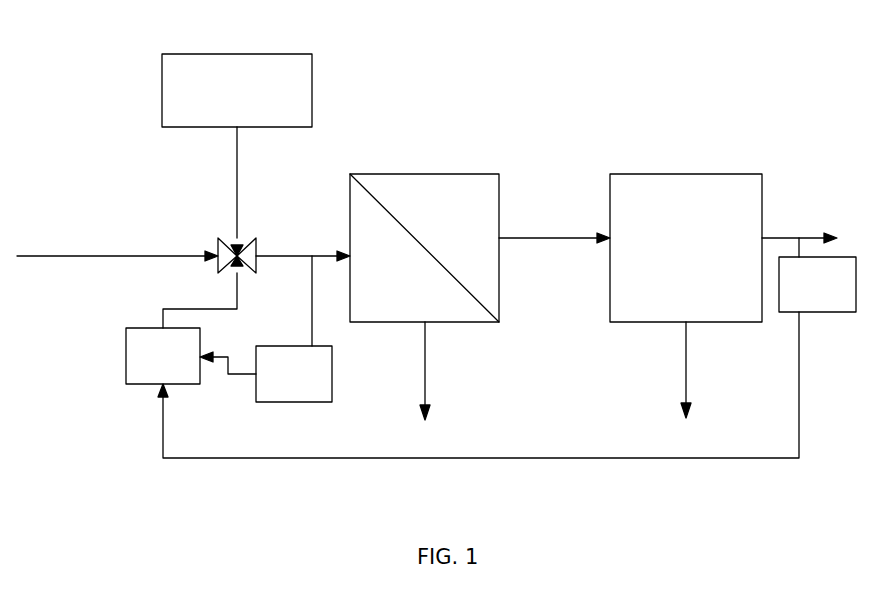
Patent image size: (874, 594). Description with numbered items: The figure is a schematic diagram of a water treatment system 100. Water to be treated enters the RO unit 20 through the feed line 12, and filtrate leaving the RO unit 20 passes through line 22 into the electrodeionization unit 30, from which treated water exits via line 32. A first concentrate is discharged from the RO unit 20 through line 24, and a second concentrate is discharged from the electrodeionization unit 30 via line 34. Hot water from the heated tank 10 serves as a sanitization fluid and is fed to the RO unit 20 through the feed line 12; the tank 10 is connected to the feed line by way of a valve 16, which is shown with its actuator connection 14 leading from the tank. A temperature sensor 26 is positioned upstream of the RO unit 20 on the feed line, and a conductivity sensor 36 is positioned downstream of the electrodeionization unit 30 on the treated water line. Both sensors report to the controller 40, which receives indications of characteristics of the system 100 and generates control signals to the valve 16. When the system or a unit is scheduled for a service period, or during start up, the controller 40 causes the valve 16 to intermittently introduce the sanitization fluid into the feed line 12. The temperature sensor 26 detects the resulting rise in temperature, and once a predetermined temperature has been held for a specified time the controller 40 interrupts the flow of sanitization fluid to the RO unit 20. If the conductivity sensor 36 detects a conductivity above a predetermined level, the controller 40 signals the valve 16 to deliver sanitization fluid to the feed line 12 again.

The water treatment system 100 is at (667, 128).
The heated tank 10 is at (237, 90).
The line 12 is at (305, 258).
The actuator connection 14 is at (237, 218).
The valve 16 is at (252, 243).
The RO unit 20 is at (424, 248).
The line 22 is at (519, 238).
The line 24 is at (427, 330).
The temperature sensor 26 is at (266, 329).
The electrodeionization unit 30 is at (686, 248).
The line 32 is at (780, 238).
The line 34 is at (686, 398).
The conductivity sensor 36 is at (817, 275).
The controller 40 is at (181, 328).